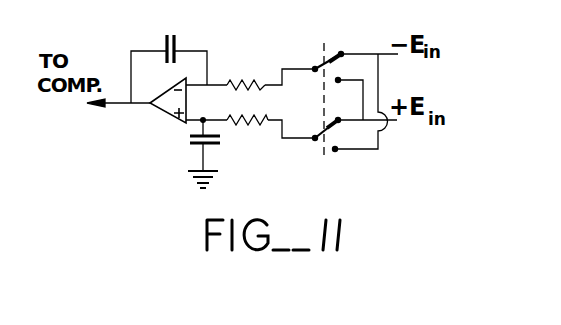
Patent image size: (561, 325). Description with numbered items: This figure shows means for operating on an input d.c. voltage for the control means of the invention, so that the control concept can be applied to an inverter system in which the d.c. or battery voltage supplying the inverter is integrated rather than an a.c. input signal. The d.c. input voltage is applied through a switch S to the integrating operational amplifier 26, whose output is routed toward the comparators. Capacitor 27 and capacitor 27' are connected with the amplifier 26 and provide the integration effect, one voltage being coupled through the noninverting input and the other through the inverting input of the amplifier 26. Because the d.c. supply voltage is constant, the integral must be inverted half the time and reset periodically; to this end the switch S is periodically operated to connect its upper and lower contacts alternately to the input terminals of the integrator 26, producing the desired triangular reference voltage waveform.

The integrating operational amplifier 26 is at (167, 102).
The capacitor 27 is at (191, 32).
The capacitor 27' is at (227, 148).
The switch S is at (327, 145).